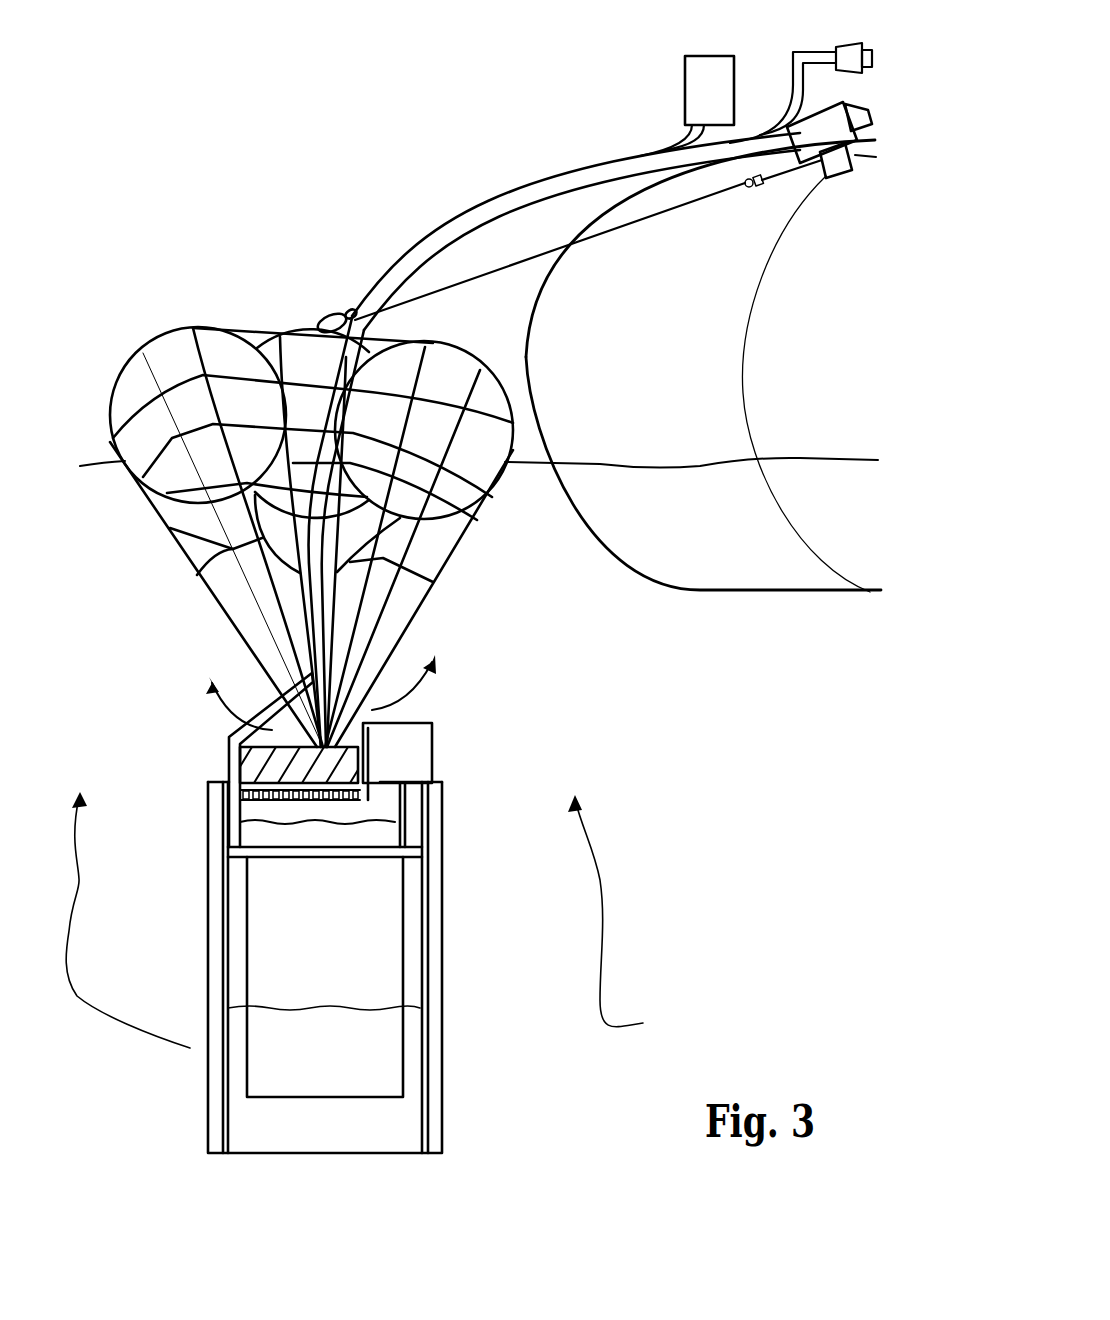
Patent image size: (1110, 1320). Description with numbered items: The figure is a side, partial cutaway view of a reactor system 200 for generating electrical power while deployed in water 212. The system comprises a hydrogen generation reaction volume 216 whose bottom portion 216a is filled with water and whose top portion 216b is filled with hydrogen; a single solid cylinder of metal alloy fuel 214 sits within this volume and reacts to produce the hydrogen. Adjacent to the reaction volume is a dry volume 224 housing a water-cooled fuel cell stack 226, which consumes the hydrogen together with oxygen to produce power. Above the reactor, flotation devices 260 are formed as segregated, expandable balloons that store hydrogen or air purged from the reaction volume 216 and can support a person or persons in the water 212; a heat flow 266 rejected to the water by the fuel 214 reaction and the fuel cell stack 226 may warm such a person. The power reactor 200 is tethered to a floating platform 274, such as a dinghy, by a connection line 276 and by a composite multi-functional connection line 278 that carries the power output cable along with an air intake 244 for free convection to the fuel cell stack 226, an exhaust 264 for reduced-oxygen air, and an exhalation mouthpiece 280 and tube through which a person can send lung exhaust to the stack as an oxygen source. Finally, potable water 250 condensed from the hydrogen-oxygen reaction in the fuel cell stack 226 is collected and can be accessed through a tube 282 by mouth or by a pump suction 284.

The reactor system 200 is at (467, 961).
The water 212 is at (97, 539).
The metal alloy fuel 214 is at (305, 990).
The hydrogen generation reaction volume 216 is at (427, 1082).
The bottom portion 216a is at (412, 1047).
The top portion 216b is at (410, 948).
The dry volume 224 is at (390, 798).
The fuel cell stack 226 is at (313, 835).
The air intake 244 is at (832, 168).
The potable water 250 is at (313, 835).
The flotation devices 260 is at (170, 363).
The exhaust 264 is at (702, 87).
The heat flow 266 is at (378, 920).
The floating platform 274 is at (657, 520).
The connection line 276 is at (490, 270).
The composite multi-functional connection line 278 is at (585, 172).
The exhalation mouthpiece 280 is at (873, 163).
The tube 282 is at (235, 767).
The pump suction 284 is at (835, 48).